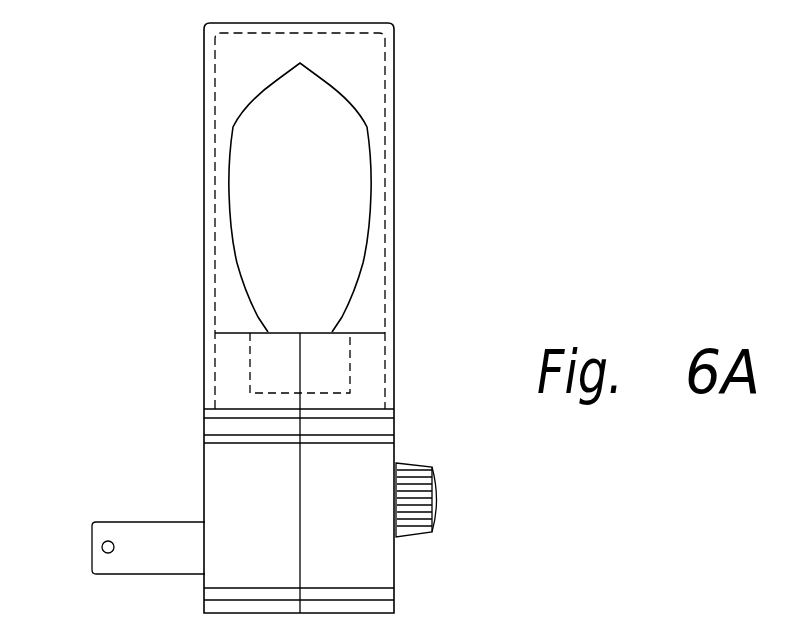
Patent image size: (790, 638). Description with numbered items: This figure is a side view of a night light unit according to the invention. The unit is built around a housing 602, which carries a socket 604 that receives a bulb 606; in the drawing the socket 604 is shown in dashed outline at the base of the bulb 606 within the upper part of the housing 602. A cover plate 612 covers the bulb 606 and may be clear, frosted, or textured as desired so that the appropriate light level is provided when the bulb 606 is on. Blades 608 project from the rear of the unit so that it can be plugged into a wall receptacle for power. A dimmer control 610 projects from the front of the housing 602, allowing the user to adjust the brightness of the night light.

The housing 602 is at (220, 482).
The socket 604 is at (343, 360).
The bulb 606 is at (356, 183).
The blades 608 is at (100, 533).
The dimmer control 610 is at (441, 498).
The cover plate 612 is at (395, 47).